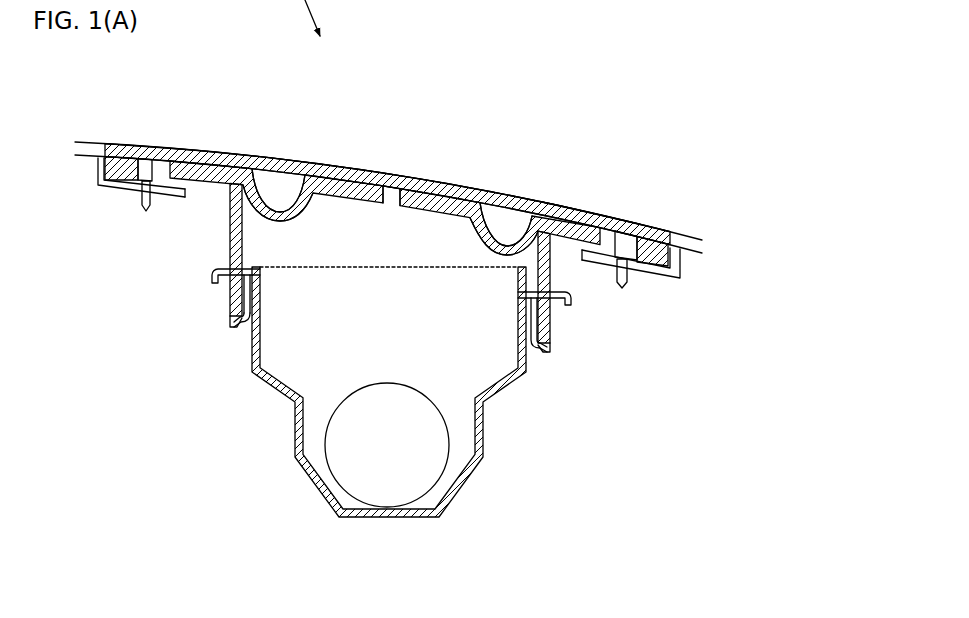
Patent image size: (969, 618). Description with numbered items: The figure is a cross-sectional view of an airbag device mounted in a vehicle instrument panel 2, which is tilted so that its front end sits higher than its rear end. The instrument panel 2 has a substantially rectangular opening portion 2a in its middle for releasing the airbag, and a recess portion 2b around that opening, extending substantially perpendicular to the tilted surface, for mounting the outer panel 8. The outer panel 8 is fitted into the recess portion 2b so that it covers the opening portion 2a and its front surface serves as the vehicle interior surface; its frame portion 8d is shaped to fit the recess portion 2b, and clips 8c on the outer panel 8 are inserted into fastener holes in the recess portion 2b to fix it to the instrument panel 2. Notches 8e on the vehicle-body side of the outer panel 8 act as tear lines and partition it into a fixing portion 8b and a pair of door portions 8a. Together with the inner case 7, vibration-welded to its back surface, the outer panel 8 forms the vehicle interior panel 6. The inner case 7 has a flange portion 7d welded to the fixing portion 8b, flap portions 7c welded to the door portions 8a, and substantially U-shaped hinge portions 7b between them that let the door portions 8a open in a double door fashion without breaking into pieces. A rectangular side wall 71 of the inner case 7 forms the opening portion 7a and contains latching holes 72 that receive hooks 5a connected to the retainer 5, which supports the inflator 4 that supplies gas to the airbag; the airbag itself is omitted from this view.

The instrument panel 2 is at (98, 141).
The opening portion 2a is at (190, 198).
The recess portion 2b is at (96, 178).
The inflator 4 is at (421, 467).
The retainer 5 is at (502, 398).
The hooks 5a is at (228, 297).
The vehicle interior panel 6 is at (573, 202).
The inner case 7 is at (208, 238).
The opening portion 7a is at (375, 248).
The hinge portion 7b is at (275, 220).
The flap portion 7c is at (353, 203).
The flange portion 7d is at (200, 186).
The outer panel 8 is at (349, 153).
The door portion 8a is at (315, 172).
The fixing portion 8b is at (222, 160).
The clips 8c is at (146, 182).
The frame portion 8d is at (122, 152).
The notches 8e is at (258, 167).
The side wall 71 is at (229, 306).
The latching holes 72 is at (229, 262).